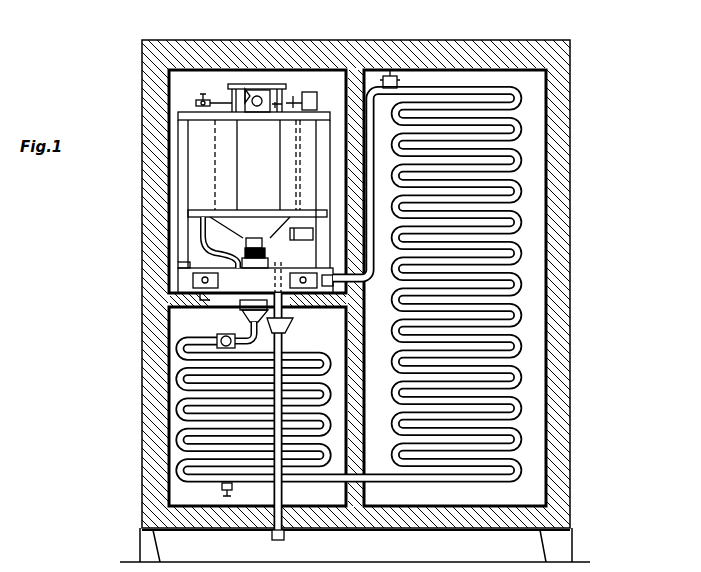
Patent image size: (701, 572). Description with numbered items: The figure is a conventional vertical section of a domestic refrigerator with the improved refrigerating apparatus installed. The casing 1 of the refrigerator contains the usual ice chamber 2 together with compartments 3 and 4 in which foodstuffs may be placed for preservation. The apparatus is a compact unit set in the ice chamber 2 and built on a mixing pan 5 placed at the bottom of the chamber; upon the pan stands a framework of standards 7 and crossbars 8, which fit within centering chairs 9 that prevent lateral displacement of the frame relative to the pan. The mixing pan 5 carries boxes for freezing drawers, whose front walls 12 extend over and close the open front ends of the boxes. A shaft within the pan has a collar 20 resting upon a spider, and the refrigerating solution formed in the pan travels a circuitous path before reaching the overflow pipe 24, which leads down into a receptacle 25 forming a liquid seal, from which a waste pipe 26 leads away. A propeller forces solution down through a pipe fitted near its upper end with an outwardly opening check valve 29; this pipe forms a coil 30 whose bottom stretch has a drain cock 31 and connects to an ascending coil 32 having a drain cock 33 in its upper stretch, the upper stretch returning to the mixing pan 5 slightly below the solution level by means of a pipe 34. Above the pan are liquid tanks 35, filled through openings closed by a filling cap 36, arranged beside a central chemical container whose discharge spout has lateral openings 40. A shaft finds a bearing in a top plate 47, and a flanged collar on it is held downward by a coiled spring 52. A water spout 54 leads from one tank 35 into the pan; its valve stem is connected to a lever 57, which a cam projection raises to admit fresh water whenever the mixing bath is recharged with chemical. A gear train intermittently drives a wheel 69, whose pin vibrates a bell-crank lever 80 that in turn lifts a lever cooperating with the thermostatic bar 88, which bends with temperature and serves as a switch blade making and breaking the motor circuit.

The casing 1 is at (553, 318).
The ice chamber 2 is at (182, 82).
The compartment 3 is at (173, 325).
The compartment 4 is at (546, 240).
The mixing pan 5 is at (258, 284).
The standards 7 is at (182, 197).
The crossbars 8 is at (186, 117).
The centering chairs 9 is at (180, 263).
The front walls 12 is at (307, 275).
The collar 20 is at (255, 326).
The overflow pipe 24 is at (283, 313).
The receptacle 25 is at (288, 329).
The waste pipe 26 is at (284, 537).
The check valve 29 is at (226, 336).
The coil 30 is at (182, 413).
The drain cock 31 is at (223, 494).
The ascending coil 32 is at (508, 383).
The drain cock 33 is at (386, 76).
The pipe 34 is at (356, 284).
The liquid tanks 35 is at (306, 136).
The filling cap 36 is at (258, 165).
The lateral openings 40 is at (253, 238).
The top plate 47 is at (264, 85).
The coiled spring 52 is at (266, 251).
The water spout 54 is at (219, 253).
The lever 57 is at (215, 107).
The wheel 69 is at (250, 84).
The bell-crank lever 80 is at (275, 104).
The thermostatic bar 88 is at (294, 90).